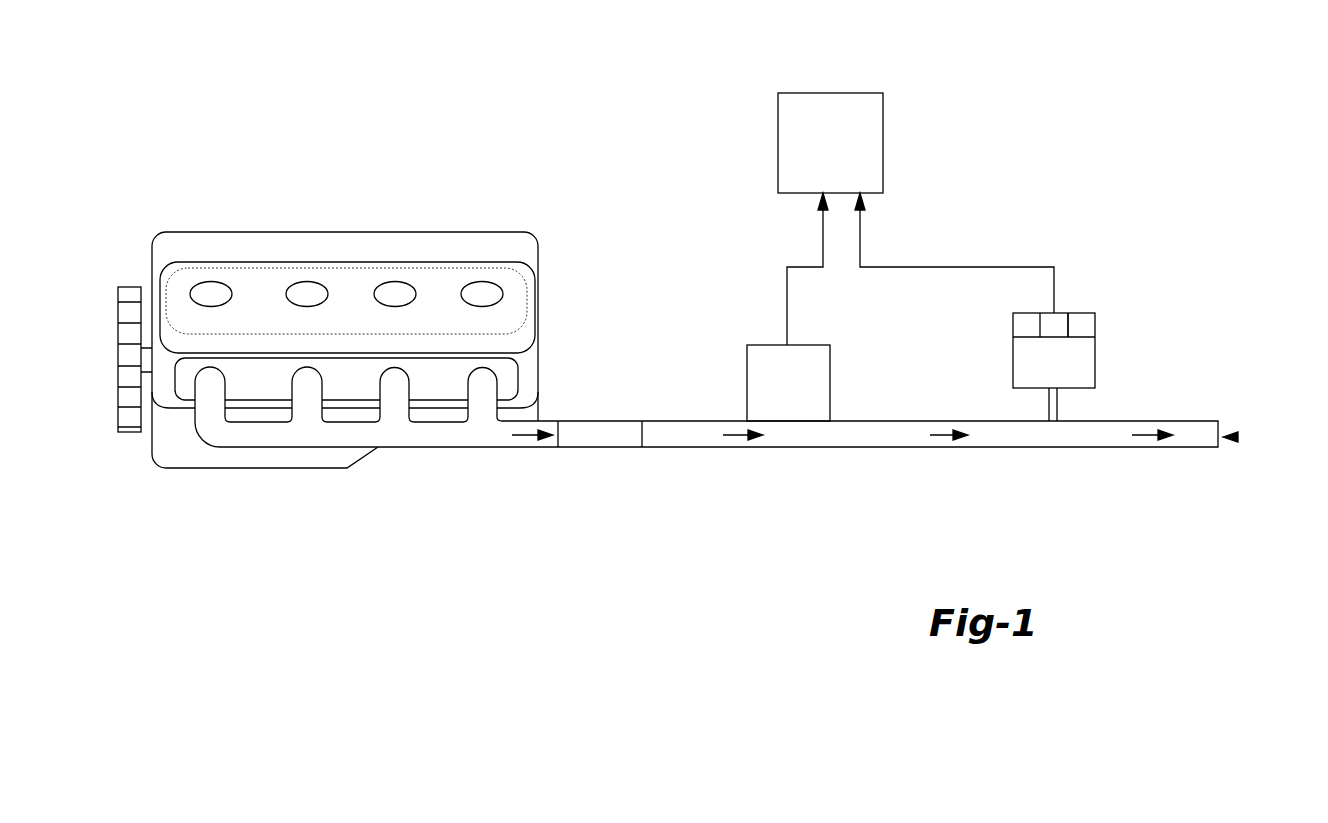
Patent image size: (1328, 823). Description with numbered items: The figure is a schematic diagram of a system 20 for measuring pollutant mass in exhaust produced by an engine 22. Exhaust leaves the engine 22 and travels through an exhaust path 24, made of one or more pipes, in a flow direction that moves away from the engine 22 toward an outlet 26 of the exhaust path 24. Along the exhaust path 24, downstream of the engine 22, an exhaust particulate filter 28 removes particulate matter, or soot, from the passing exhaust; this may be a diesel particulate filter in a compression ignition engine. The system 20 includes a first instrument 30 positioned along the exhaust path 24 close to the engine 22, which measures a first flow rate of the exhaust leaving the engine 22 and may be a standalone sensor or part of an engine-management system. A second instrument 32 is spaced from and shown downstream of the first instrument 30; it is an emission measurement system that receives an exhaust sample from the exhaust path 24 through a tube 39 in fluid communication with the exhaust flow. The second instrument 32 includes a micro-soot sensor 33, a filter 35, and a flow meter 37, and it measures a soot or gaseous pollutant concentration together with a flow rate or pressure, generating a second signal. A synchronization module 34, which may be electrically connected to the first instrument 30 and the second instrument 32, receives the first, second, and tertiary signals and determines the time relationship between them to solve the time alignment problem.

The system 20 is at (560, 65).
The engine 22 is at (220, 242).
The exhaust path 24 is at (1208, 516).
The outlet 26 is at (1238, 437).
The exhaust particulate filter 28 is at (589, 449).
The first instrument 30 is at (773, 398).
The second instrument 32 is at (1042, 376).
The micro-soot sensor 33 is at (1022, 327).
The synchronization module 34 is at (818, 158).
The filter 35 is at (1060, 320).
The flow meter 37 is at (1087, 327).
The tube 39 is at (1058, 410).